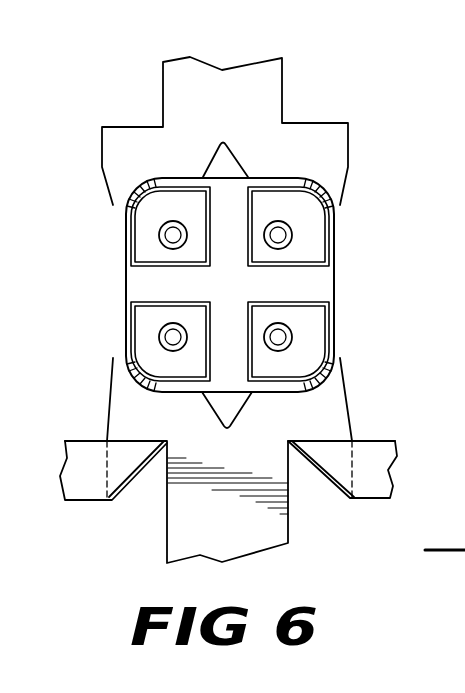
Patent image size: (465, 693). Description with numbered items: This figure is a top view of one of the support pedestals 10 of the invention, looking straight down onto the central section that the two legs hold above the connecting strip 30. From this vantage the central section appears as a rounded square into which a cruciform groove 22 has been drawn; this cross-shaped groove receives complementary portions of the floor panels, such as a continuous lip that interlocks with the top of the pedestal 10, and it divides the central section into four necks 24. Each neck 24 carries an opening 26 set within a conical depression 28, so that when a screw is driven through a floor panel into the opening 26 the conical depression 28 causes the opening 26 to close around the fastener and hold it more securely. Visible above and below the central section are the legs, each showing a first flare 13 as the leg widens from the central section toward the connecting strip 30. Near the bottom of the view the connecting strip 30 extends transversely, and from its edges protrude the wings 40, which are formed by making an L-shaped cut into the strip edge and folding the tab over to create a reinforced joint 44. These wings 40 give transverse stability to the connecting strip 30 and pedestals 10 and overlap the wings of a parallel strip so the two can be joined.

The support pedestal 10 is at (127, 103).
The first flare 13 is at (278, 177).
The cruciform groove 22 is at (312, 283).
The neck 24 is at (140, 315).
The opening 26 is at (286, 335).
The conical depression 28 is at (279, 346).
The connecting strip 30 is at (183, 518).
The wing 40 is at (372, 448).
The reinforced joint 44 is at (125, 457).